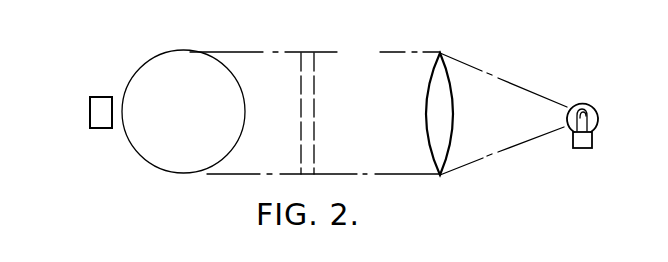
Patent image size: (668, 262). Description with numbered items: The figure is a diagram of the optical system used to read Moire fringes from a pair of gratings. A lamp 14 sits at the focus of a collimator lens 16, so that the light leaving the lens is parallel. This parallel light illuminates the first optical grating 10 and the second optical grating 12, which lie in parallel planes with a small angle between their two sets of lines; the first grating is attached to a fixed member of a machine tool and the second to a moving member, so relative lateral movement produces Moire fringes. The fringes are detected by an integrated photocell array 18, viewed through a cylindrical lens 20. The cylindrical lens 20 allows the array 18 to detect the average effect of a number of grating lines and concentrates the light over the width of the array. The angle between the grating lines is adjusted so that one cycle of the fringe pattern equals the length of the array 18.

The first optical grating 10 is at (300, 88).
The second optical grating 12 is at (313, 98).
The lamp 14 is at (597, 125).
The collimator lens 16 is at (442, 130).
The integrated photocell array 18 is at (89, 117).
The cylindrical lens 20 is at (152, 63).